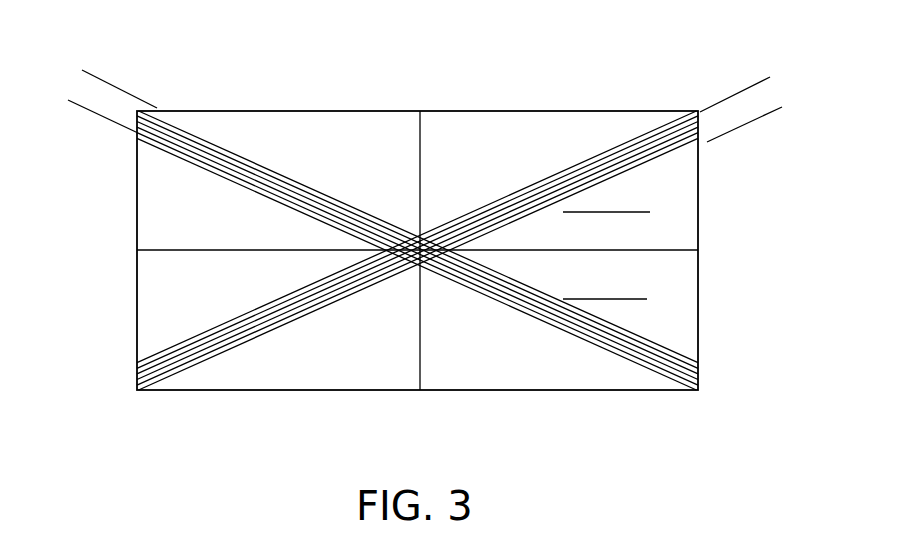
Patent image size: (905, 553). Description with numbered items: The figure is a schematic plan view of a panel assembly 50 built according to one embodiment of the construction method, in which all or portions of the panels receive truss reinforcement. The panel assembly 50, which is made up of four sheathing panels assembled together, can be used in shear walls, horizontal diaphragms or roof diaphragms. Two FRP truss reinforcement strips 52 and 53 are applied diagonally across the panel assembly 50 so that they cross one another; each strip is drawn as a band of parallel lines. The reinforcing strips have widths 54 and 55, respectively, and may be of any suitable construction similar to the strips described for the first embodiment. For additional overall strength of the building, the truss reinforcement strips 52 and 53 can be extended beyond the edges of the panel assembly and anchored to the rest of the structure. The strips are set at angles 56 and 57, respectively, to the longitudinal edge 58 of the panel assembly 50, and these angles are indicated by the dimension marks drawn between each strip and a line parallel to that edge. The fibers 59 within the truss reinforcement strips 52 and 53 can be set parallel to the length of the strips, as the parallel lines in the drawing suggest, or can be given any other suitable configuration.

The panel assembly 50 is at (279, 78).
The FRP truss reinforcement strip 52 is at (547, 177).
The FRP truss reinforcement strip 53 is at (535, 328).
The width 54 is at (735, 44).
The width 55 is at (120, 32).
The angle 56 is at (635, 177).
The angle 57 is at (633, 299).
The longitudinal edge 58 is at (460, 111).
The fibers 59 is at (227, 157).